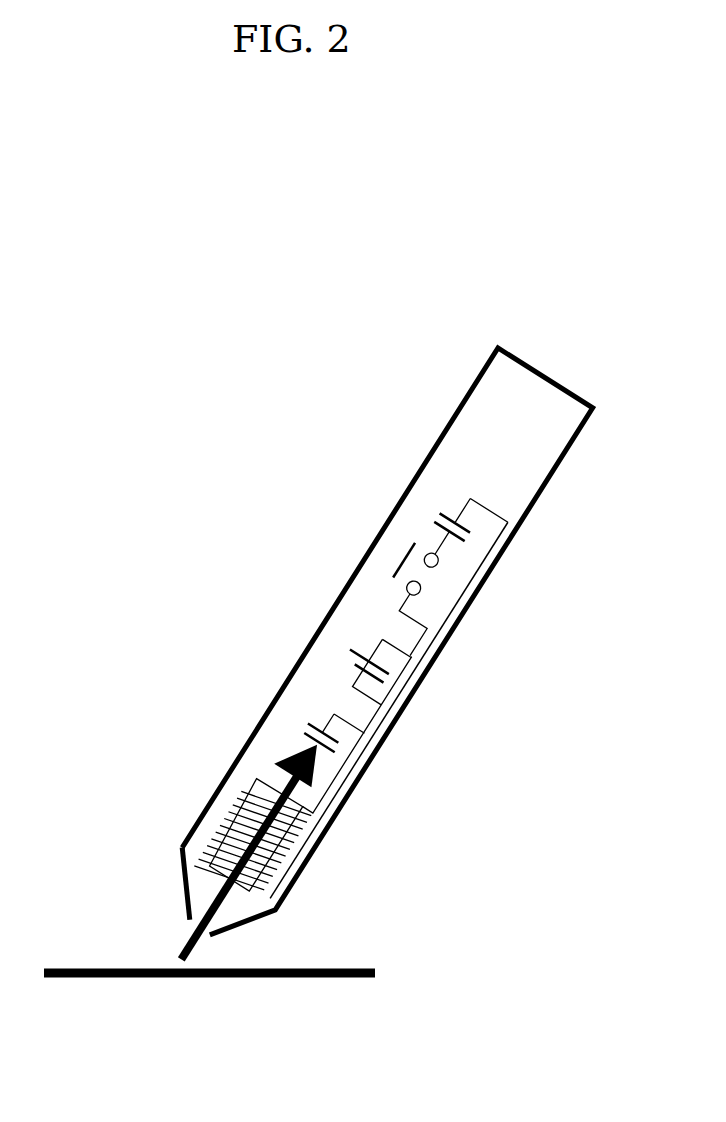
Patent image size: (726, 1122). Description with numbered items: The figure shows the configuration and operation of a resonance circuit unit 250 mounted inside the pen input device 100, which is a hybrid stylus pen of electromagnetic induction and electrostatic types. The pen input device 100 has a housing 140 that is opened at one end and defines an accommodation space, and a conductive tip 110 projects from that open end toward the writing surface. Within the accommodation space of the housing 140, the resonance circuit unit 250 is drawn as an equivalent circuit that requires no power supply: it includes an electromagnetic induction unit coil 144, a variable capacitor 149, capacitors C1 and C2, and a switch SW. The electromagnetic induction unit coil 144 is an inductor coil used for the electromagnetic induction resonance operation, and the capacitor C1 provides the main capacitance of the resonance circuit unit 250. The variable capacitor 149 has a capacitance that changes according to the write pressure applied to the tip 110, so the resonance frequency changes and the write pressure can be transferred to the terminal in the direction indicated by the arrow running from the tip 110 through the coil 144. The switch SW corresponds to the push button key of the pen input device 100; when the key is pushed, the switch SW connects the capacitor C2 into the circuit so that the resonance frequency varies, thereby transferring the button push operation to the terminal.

The pen input device 100 is at (314, 454).
The housing 140 is at (463, 400).
The conductive tip 110 is at (184, 948).
The electromagnetic induction unit coil 144 is at (245, 808).
The variable capacitor 149 is at (374, 650).
The resonance circuit unit 250 is at (313, 669).
The capacitor C1 is at (316, 721).
The capacitor C2 is at (452, 512).
The switch SW is at (400, 552).